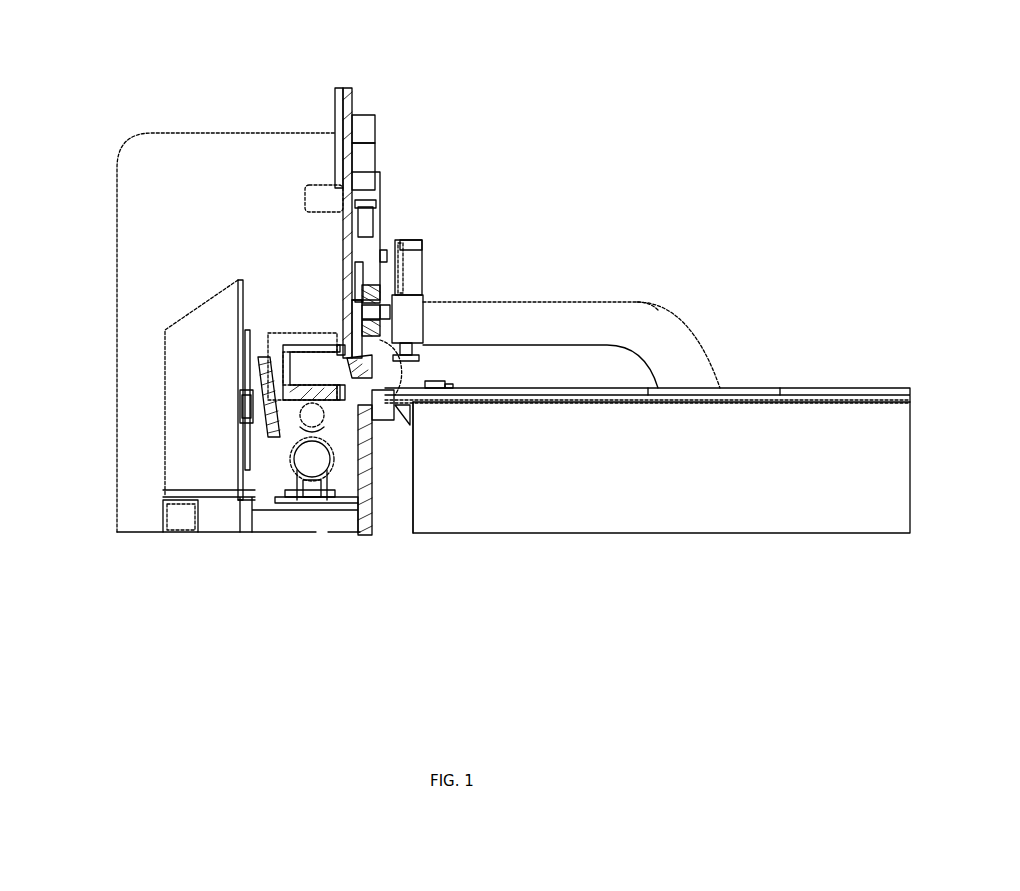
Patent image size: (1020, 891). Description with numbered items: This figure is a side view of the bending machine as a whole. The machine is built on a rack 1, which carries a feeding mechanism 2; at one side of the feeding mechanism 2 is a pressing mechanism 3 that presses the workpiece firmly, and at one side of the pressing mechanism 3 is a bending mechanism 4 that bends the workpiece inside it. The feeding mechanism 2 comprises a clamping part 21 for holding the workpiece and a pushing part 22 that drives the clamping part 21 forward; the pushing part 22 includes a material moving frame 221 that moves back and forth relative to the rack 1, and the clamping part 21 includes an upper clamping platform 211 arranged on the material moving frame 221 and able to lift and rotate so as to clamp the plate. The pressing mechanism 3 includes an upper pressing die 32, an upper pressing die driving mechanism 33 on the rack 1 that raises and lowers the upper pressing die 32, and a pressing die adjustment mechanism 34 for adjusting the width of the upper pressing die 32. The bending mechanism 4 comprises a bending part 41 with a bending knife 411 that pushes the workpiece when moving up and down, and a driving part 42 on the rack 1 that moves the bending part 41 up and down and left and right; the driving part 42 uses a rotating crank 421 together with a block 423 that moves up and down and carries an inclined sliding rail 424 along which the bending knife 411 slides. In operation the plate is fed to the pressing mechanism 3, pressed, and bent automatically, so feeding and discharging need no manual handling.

The rack 1 is at (430, 527).
The feeding mechanism 2 is at (730, 352).
The clamping part 21 is at (400, 370).
The upper clamping platform 211 is at (395, 322).
The pushing part 22 is at (575, 292).
The material moving frame 221 is at (600, 322).
The pressing mechanism 3 is at (420, 520).
The upper pressing die 32 is at (345, 332).
The upper pressing die driving mechanism 33 is at (365, 250).
The pressing die adjustment mechanism 34 is at (422, 285).
The bending mechanism 4 is at (255, 445).
The bending part 41 is at (290, 330).
The bending knife 411 is at (318, 332).
The driving part 42 is at (333, 433).
The crank 421 is at (330, 433).
The block 423 is at (258, 405).
The inclined sliding rail 424 is at (250, 390).